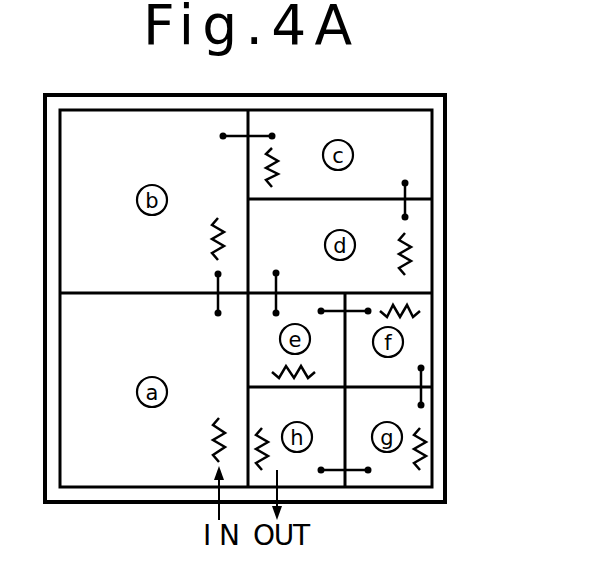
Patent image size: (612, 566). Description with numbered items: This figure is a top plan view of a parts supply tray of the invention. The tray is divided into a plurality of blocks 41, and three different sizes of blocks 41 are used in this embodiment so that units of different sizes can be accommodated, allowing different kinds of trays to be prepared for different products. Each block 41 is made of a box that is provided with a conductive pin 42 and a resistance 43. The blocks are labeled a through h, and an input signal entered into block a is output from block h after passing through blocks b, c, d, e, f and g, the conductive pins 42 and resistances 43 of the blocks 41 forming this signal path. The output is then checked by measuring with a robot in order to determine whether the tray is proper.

The block 41 is at (415, 156).
The conductive pin 42 is at (404, 189).
The resistance 43 is at (408, 253).